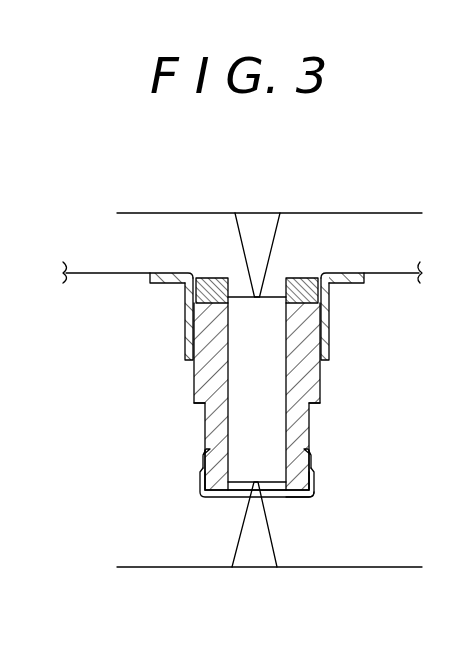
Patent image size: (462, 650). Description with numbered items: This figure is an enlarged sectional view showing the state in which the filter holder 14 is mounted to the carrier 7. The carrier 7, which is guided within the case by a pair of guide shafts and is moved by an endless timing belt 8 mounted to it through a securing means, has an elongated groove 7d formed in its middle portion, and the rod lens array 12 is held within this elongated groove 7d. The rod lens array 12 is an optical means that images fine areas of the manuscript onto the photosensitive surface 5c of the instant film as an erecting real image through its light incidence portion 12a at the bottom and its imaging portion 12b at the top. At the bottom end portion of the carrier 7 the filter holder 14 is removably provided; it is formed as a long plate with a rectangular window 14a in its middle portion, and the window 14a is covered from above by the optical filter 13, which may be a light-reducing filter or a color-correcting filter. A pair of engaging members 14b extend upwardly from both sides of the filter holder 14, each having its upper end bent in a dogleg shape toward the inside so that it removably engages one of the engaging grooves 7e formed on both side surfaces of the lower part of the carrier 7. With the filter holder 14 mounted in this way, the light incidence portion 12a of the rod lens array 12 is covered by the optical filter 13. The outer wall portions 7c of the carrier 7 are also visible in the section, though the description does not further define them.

The photosensitive surface 5c is at (190, 215).
The timing belt 8 is at (128, 274).
The bracket wall 7c is at (187, 331).
The imaging portion 12b is at (284, 278).
The carrier 7 is at (195, 380).
The rod lens array 12 is at (270, 389).
The elongated groove 7d is at (229, 405).
The engaging members 14b is at (204, 452).
The engaging grooves 7e is at (205, 462).
The filter holder 14 is at (307, 487).
The optical filter 13 is at (235, 498).
The light incidence portion 12a is at (266, 498).
The window 14a is at (288, 500).